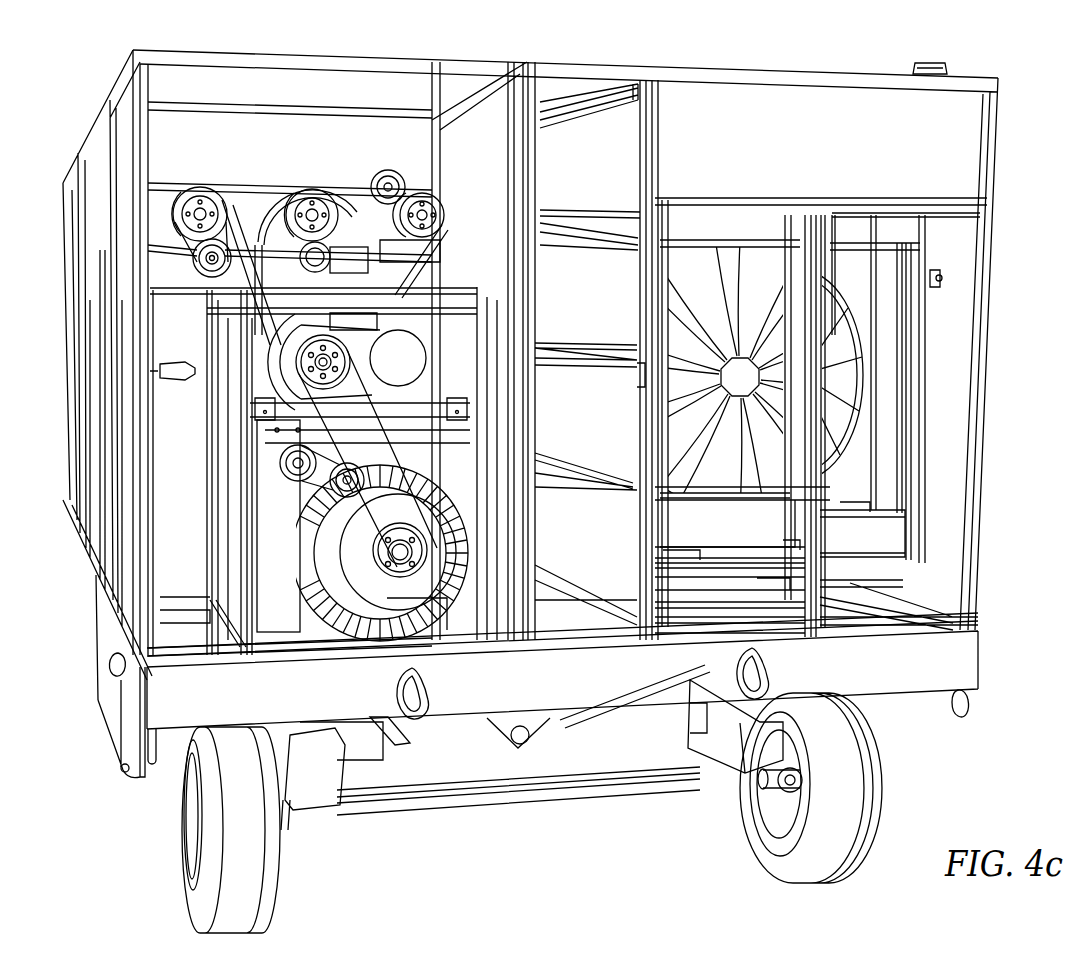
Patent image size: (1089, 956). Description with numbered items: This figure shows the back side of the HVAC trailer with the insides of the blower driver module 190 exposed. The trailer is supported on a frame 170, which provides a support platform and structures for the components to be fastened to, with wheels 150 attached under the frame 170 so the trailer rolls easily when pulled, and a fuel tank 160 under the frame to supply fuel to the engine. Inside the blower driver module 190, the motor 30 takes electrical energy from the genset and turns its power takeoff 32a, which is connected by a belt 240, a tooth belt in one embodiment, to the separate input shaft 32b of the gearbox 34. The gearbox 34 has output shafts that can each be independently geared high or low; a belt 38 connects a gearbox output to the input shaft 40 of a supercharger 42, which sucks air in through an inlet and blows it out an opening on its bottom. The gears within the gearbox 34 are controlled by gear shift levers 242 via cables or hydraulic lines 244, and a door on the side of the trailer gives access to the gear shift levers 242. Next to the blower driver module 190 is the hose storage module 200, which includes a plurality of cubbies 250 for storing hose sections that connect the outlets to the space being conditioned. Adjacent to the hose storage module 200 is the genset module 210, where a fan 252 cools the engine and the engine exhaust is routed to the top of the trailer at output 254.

The motor 30 is at (343, 551).
The power takeoff 32a is at (418, 557).
The input shaft 32b is at (340, 359).
The gearbox 34 is at (382, 330).
The belt 38 is at (242, 277).
The input shaft 40 is at (208, 203).
The supercharger 42 is at (267, 227).
The wheels 150 is at (863, 783).
The fuel tank 160 is at (115, 708).
The frame 170 is at (965, 643).
The blower driver module 190 is at (302, 120).
The hose storage module 200 is at (577, 93).
The genset module 210 is at (945, 260).
The belt 240 is at (260, 408).
The gear shift levers 242 is at (168, 358).
The cables or hydraulic lines 244 is at (300, 170).
The cubbies 250 is at (607, 148).
The fan 252 is at (693, 296).
The output 254 is at (950, 68).